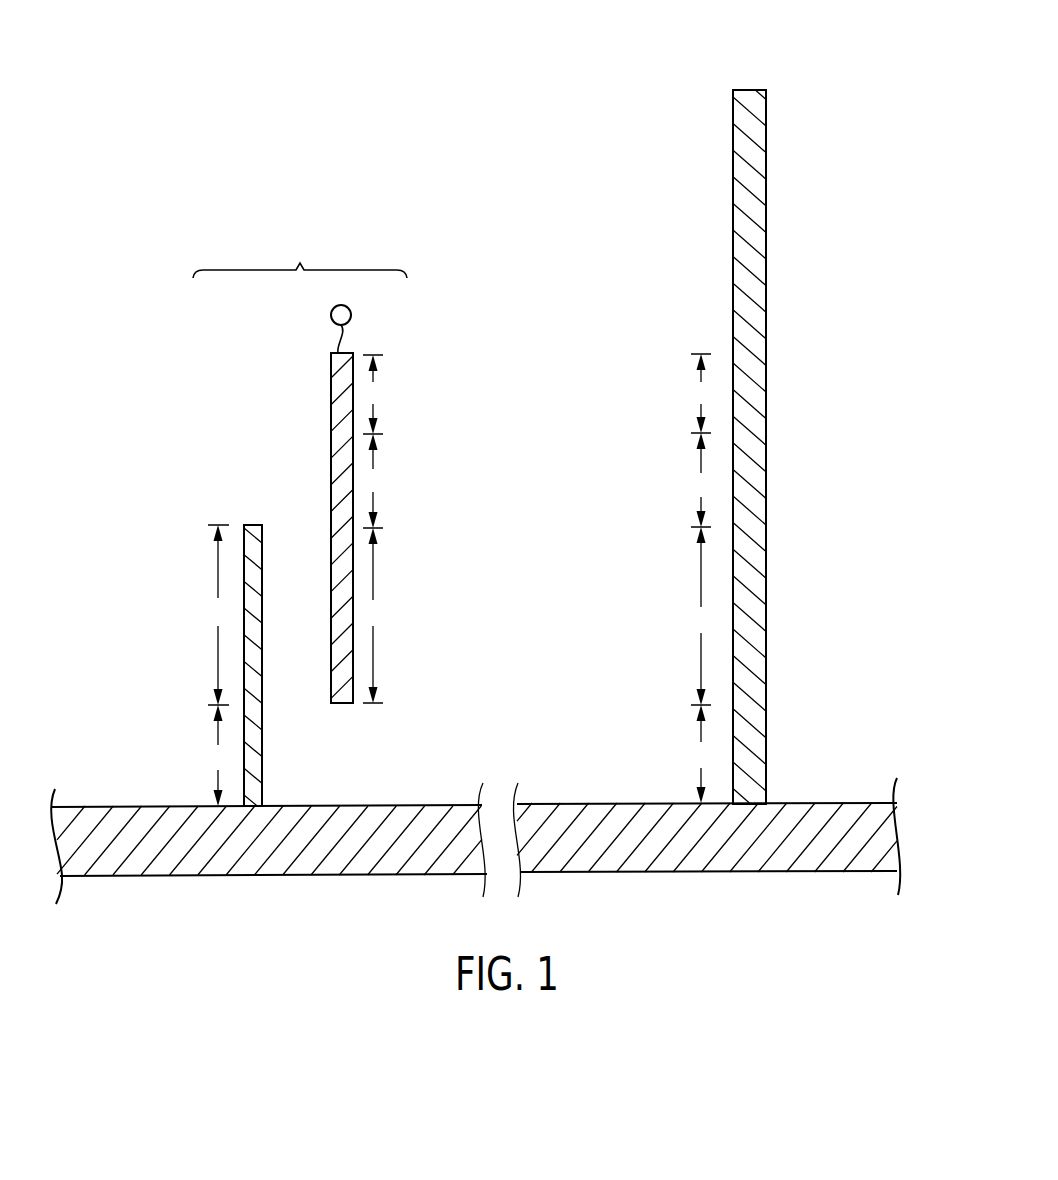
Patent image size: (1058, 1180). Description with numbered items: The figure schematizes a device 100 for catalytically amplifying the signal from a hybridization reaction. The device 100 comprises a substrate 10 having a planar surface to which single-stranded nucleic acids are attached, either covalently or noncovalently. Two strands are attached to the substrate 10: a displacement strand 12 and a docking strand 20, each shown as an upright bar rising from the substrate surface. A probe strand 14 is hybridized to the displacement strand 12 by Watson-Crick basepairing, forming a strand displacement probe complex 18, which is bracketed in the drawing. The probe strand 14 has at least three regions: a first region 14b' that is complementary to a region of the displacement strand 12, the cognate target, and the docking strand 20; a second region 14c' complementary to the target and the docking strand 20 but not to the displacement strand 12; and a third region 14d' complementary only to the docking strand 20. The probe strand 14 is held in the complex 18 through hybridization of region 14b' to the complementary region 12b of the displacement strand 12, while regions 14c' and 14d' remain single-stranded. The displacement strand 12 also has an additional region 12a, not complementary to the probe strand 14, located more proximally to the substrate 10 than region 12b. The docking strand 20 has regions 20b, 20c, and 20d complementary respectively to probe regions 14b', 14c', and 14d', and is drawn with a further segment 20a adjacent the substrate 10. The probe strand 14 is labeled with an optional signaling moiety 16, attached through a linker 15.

The substrate 10 is at (823, 803).
The displacement strand 12 is at (262, 745).
The additional region of displacement strand 12a is at (218, 755).
The displacement strand region 12b is at (218, 615).
The probe strand 14 is at (331, 405).
The first region of probe strand 14b' is at (373, 615).
The second region of probe strand 14c' is at (373, 481).
The third region of probe strand 14d' is at (373, 394).
The linker 15 is at (343, 338).
The signaling moiety 16 is at (345, 305).
The strand displacement probe complex 18 is at (300, 268).
The docking strand 20 is at (766, 140).
The first segment of third nanowire 20a is at (702, 754).
The docking strand region 20b is at (701, 616).
The docking strand region 20c is at (701, 480).
The docking strand region 20d is at (701, 393).
The device 100 is at (852, 79).